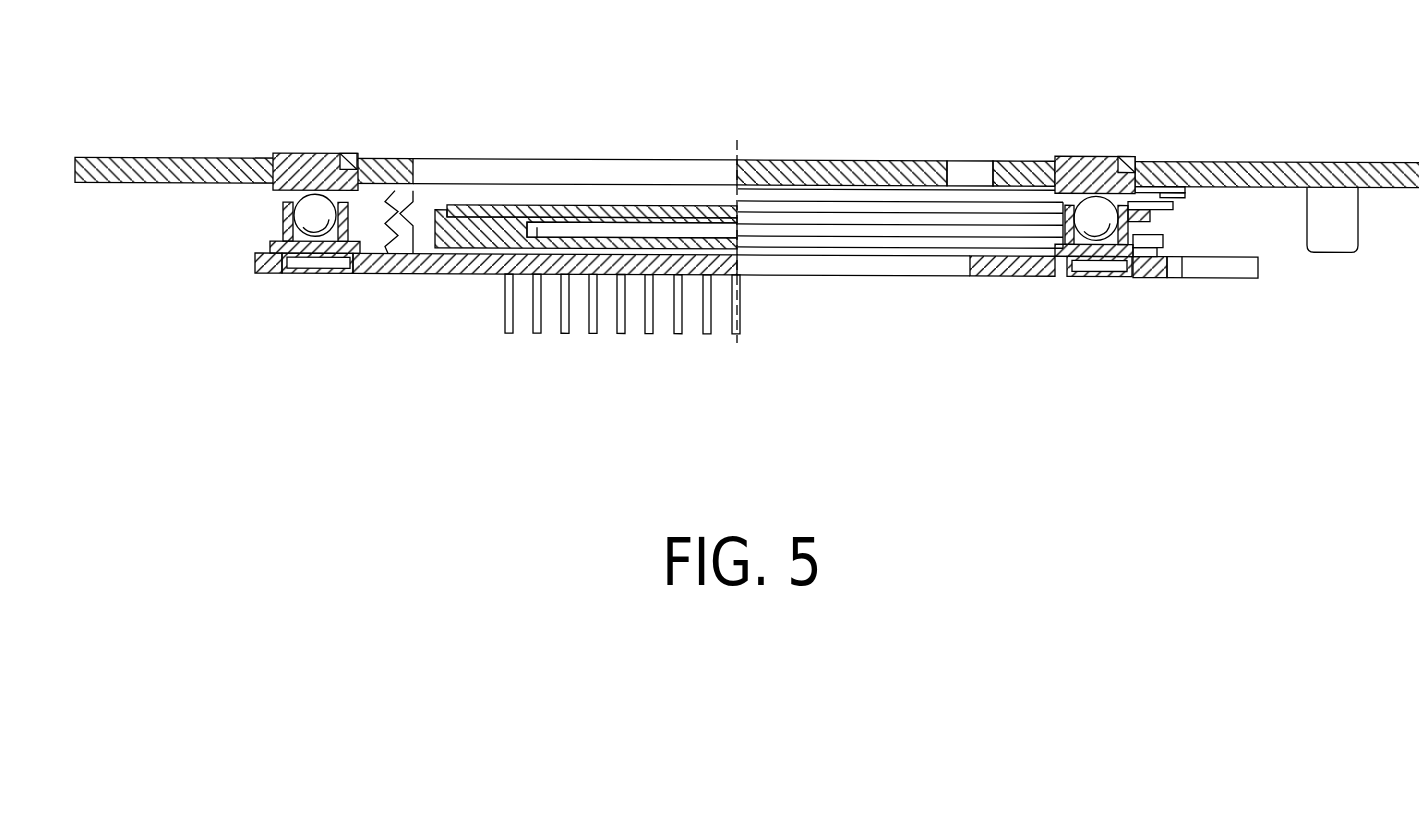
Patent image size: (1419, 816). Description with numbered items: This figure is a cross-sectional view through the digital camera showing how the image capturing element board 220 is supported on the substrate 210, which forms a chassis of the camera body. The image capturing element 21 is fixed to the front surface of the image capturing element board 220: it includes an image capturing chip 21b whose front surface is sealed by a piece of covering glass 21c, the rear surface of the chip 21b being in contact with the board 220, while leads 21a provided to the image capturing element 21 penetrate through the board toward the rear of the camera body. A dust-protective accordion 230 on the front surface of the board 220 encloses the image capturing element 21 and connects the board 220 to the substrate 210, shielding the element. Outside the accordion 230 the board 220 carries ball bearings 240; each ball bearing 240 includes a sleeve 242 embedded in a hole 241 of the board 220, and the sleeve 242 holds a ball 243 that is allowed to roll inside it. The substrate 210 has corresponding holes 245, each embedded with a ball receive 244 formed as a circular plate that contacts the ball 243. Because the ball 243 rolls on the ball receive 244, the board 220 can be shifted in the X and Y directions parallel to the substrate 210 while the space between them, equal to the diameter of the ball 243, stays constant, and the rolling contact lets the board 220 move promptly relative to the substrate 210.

The substrate 210 is at (133, 157).
The image capturing element board 220 is at (422, 271).
The dust-protective accordion 230 is at (412, 187).
The image capturing element 21 is at (500, 271).
The leads 21a is at (673, 320).
The image capturing chip 21b is at (595, 226).
The covering glass 21c is at (680, 208).
The ball bearing 240 is at (725, 237).
The hole 241 is at (1068, 276).
The sleeve 242 is at (319, 271).
The ball 243 is at (300, 214).
The ball receive 244 is at (273, 159).
The hole 245 is at (345, 157).